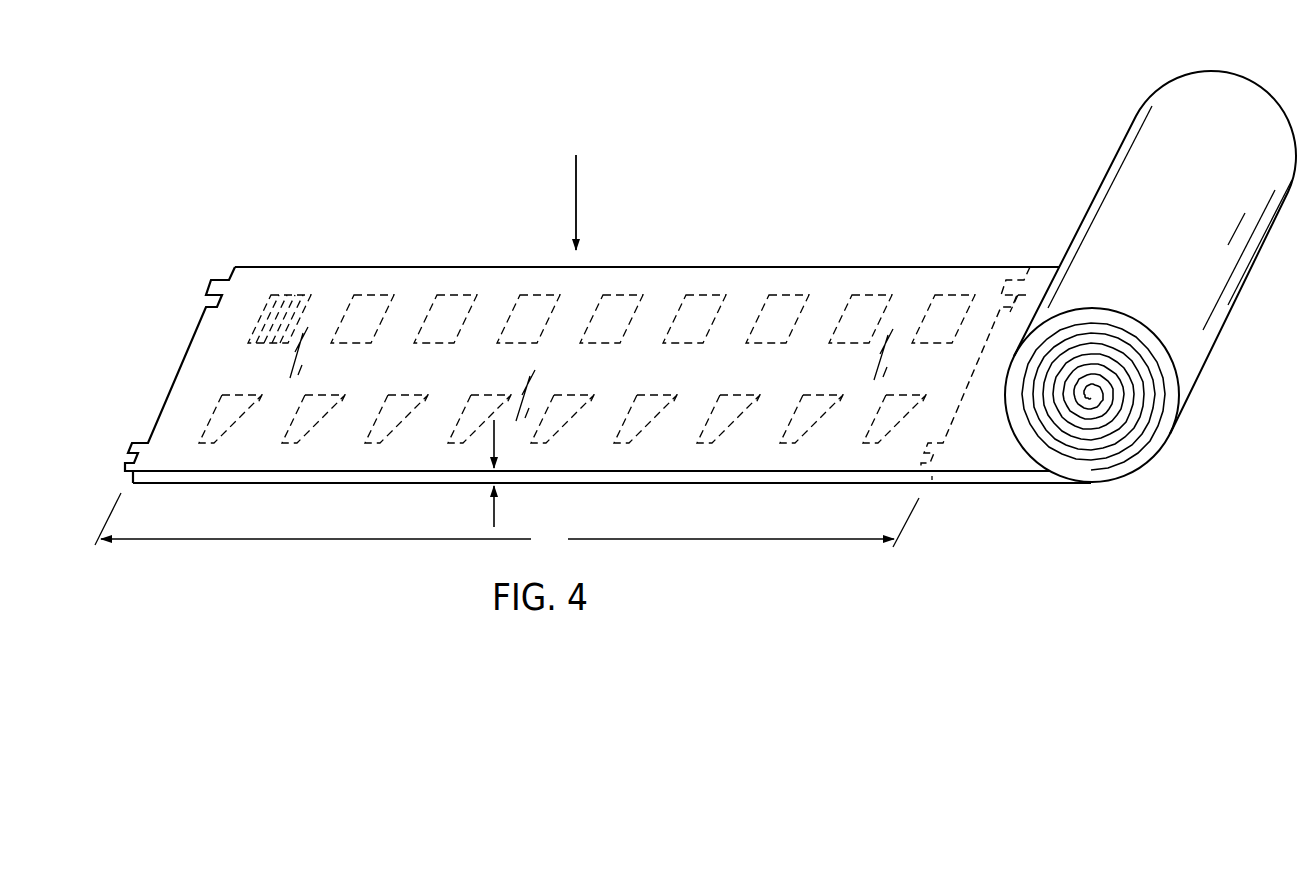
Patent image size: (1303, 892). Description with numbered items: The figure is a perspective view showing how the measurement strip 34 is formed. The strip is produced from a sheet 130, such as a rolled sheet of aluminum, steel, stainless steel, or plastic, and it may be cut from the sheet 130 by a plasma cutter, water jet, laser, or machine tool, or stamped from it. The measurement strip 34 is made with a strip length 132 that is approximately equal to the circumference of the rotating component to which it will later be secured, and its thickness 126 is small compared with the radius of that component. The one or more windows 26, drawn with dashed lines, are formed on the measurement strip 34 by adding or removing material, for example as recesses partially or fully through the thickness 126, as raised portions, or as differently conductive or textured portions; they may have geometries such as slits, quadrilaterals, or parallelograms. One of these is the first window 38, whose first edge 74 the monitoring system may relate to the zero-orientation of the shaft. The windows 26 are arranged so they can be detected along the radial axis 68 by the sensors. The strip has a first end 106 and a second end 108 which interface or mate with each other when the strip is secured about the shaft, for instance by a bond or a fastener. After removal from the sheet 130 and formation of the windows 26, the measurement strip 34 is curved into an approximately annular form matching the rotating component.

The windows 26 is at (426, 349).
The measurement strip 34 is at (329, 280).
The first window 38 is at (250, 309).
The radial axis 68 is at (577, 193).
The first edge 74 is at (243, 333).
The first end 106 is at (178, 369).
The second end 108 is at (1004, 318).
The thickness 126 is at (494, 505).
The sheet 130 is at (1230, 87).
The strip length 132 is at (507, 522).